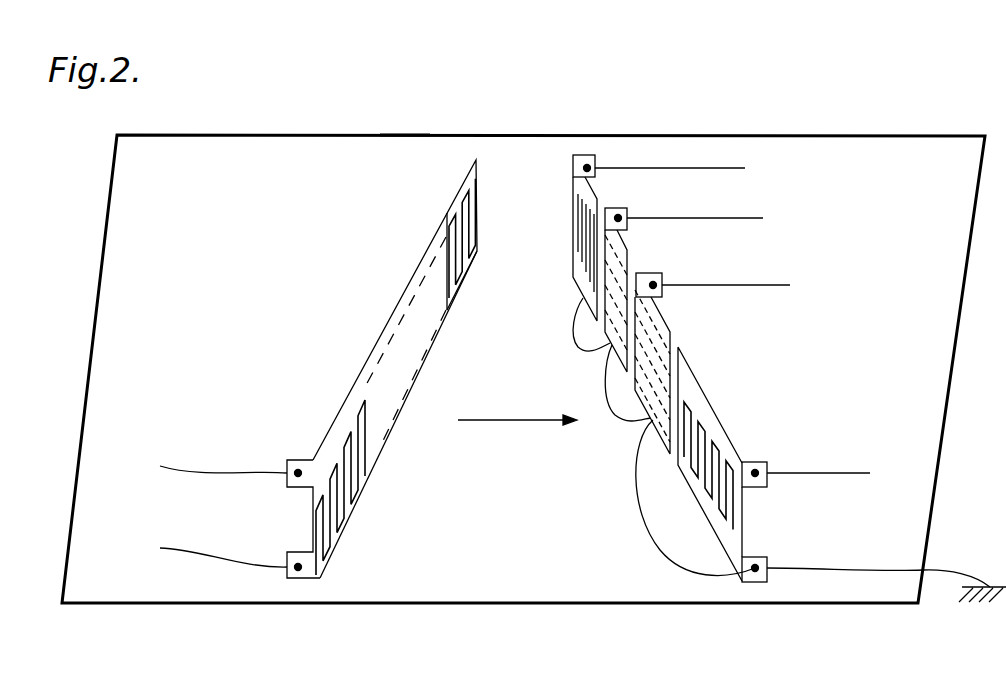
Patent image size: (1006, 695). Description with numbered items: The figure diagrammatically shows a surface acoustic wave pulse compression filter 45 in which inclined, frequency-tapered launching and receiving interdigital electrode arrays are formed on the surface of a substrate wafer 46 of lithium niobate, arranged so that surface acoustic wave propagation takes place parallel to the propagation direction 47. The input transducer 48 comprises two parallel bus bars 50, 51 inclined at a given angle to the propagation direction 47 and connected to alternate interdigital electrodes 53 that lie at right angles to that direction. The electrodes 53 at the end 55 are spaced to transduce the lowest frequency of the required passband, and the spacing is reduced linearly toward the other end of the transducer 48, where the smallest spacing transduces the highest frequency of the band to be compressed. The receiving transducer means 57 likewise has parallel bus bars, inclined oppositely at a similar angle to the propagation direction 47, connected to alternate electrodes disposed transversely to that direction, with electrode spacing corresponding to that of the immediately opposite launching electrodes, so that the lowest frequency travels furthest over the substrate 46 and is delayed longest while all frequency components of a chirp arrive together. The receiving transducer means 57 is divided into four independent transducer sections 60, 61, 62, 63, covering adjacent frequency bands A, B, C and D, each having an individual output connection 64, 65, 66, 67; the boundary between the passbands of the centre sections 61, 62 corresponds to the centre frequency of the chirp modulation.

The pulse compression filter 45 is at (524, 582).
The substrate wafer 46 is at (403, 134).
The propagation direction 47 is at (510, 422).
The input transducer 48 is at (330, 334).
The bus bar 50 is at (366, 354).
The bus bar 51 is at (379, 444).
The interdigital electrodes 53 is at (326, 515).
The end 55 is at (358, 543).
The receiving transducer means 57 is at (746, 353).
The transducer section 60 is at (722, 420).
The transducer section 61 is at (668, 317).
The transducer section 62 is at (625, 247).
The transducer section 63 is at (596, 199).
The output connection 64 is at (833, 472).
The output connection 65 is at (782, 282).
The output connection 66 is at (755, 217).
The output connection 67 is at (745, 171).